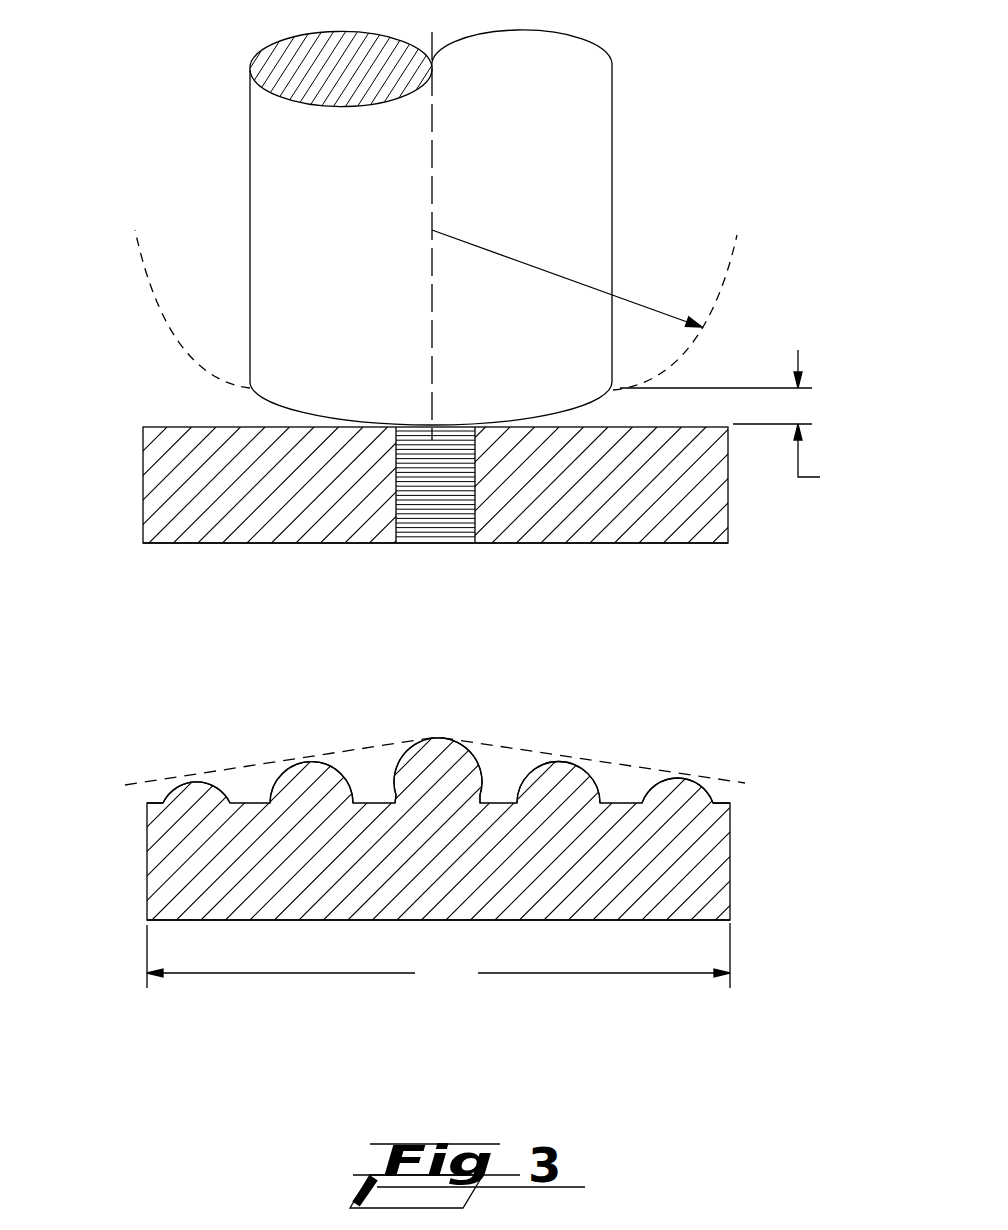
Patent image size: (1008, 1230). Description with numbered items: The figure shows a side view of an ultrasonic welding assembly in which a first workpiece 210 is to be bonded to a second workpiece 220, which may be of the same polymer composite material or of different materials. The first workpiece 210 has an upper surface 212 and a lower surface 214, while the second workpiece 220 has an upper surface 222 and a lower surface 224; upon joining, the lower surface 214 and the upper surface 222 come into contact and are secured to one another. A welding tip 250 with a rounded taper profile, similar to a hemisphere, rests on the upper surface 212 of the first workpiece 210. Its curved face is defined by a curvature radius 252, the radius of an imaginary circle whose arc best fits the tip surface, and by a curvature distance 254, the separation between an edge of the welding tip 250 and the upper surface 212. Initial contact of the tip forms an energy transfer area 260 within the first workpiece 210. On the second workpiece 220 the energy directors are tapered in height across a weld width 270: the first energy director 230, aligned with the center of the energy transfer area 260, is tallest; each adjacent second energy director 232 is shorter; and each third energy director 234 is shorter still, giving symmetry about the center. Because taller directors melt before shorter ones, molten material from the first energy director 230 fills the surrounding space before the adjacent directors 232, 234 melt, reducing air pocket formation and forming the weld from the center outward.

The first workpiece 210 is at (143, 488).
The upper surface of first workpiece 212 is at (698, 424).
The lower surface of first workpiece 214 is at (683, 543).
The second workpiece 220 is at (147, 887).
The upper surface of second workpiece 222 is at (722, 802).
The lower surface of second workpiece 224 is at (653, 920).
The first energy director 230 is at (438, 735).
The second energy director 232 is at (296, 762).
The third energy director 234 is at (193, 782).
The welding tip 250 is at (311, 47).
The curvature radius 252 is at (653, 307).
The curvature distance 254 is at (810, 458).
The energy transfer area 260 is at (433, 543).
The weld width 270 is at (438, 955).